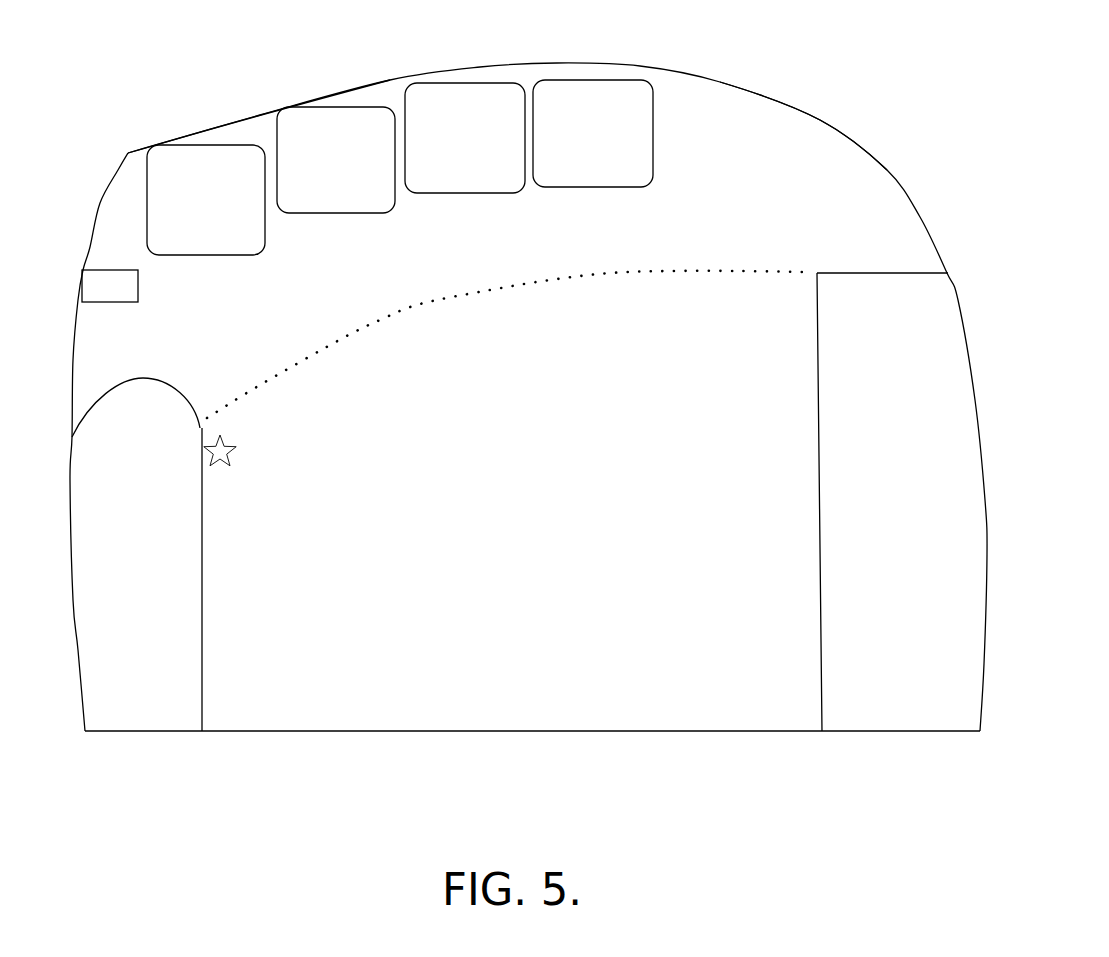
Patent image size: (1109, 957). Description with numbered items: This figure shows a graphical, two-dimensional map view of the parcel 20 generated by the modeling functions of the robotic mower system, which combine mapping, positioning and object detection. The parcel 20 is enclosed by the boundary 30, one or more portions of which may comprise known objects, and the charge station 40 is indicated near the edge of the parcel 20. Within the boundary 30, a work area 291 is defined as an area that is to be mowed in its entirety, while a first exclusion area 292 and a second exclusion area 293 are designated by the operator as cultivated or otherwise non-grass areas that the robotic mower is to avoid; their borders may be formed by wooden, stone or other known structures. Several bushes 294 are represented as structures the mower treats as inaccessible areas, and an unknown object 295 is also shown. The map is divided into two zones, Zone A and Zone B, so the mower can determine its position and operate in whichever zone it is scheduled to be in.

The parcel 20 is at (778, 80).
The boundary 30 is at (350, 90).
The work area 291 is at (775, 130).
The first exclusion area 292 is at (145, 395).
The second exclusion area 293 is at (827, 313).
The bushes 294 is at (223, 257).
The charge station 40 is at (112, 280).
The unknown object 295 is at (220, 445).